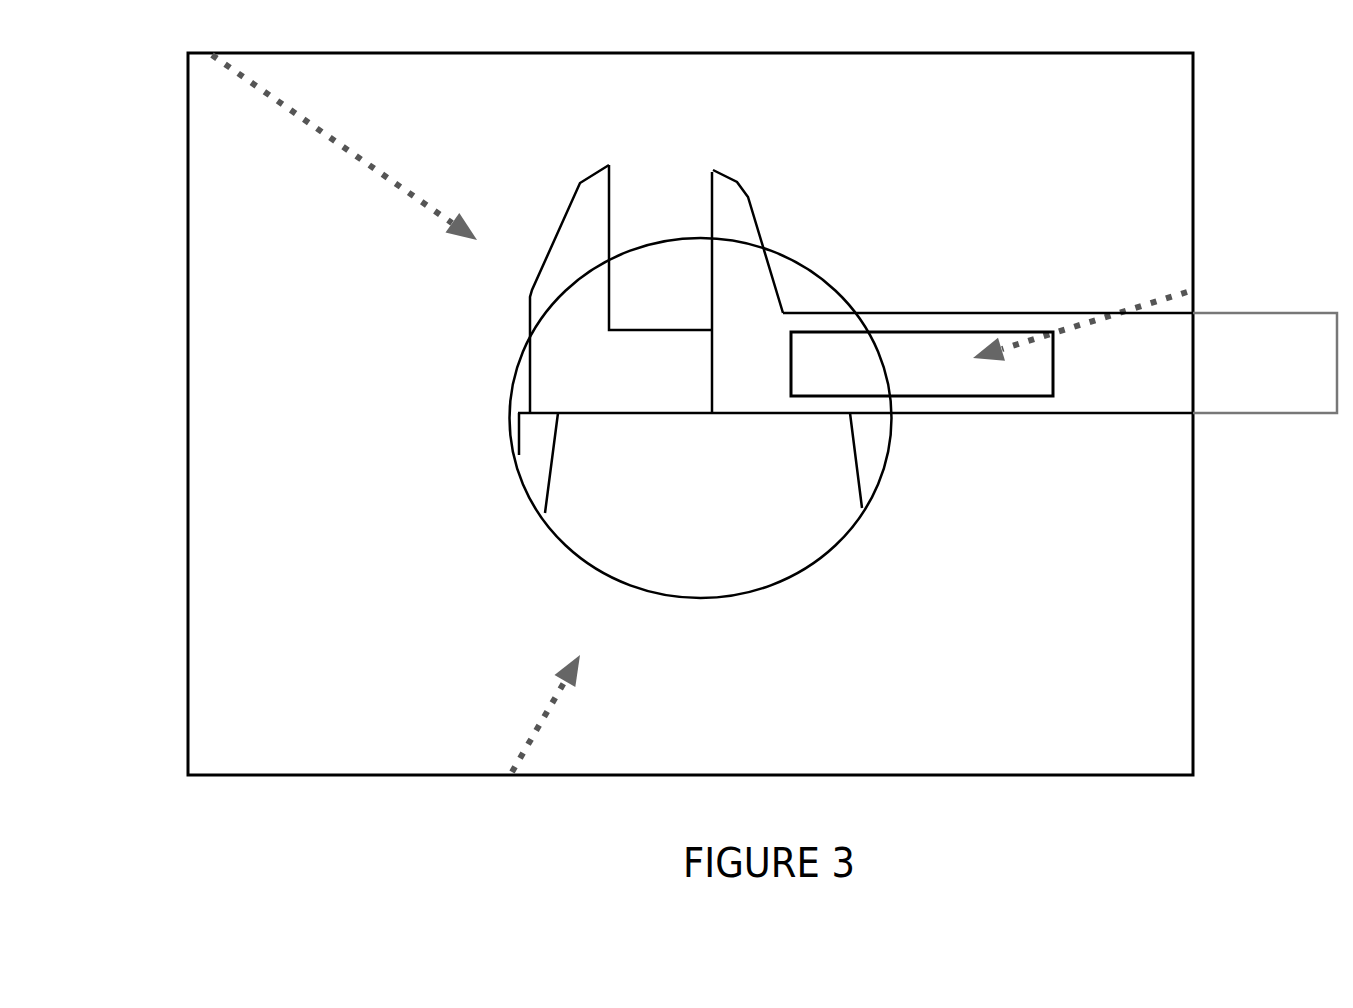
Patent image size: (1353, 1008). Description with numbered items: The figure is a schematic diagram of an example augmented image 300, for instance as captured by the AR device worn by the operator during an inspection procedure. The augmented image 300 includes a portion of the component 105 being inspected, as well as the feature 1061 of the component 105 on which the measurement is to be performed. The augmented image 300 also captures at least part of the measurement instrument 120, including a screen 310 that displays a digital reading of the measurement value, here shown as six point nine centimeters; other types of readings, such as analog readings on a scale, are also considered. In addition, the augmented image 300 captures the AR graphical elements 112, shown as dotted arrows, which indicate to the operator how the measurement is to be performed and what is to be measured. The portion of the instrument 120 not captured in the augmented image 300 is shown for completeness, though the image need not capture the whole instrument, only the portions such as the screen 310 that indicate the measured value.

The augmented image 300 is at (188, 112).
The component 105 is at (243, 546).
The AR graphical elements 112 is at (350, 153).
The measurement instrument 120 is at (737, 182).
The feature 1061 is at (837, 547).
The screen 310 is at (978, 397).